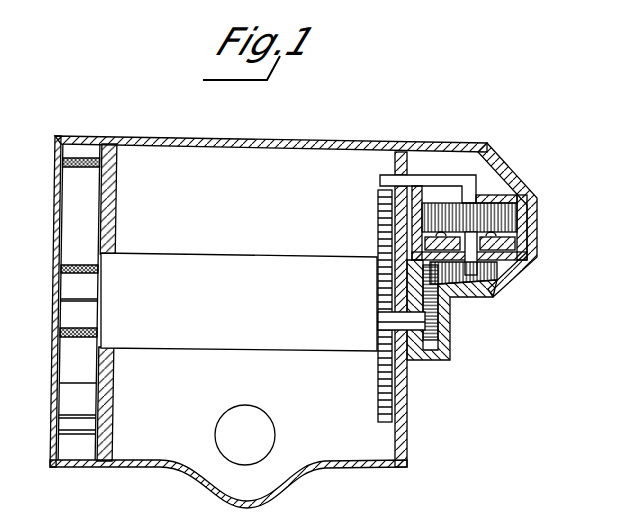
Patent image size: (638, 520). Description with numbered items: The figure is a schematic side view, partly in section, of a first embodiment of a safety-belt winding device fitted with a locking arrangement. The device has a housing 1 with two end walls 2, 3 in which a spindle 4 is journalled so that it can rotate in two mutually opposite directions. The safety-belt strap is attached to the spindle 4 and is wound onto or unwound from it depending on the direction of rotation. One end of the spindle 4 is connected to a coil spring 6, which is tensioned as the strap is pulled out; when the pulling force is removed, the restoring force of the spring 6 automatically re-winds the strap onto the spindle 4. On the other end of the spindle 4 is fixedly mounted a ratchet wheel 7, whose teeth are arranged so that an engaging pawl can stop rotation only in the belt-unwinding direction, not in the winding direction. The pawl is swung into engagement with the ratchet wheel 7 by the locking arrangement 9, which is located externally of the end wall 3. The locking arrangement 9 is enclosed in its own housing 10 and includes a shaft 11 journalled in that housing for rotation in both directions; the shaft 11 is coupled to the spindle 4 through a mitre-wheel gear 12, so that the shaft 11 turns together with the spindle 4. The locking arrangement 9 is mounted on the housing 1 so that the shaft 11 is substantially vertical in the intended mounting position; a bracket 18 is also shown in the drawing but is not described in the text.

The housing 1 is at (150, 136).
The end wall 2 is at (108, 460).
The end wall 3 is at (401, 428).
The spindle 4 is at (149, 250).
The coil spring 6 is at (66, 243).
The ratchet wheel 7 is at (385, 383).
The locking arrangement 9 is at (551, 235).
The housing 10 is at (522, 262).
The shaft 11 is at (490, 286).
The mitre-wheel gear 12 is at (440, 312).
The bracket 18 is at (427, 176).